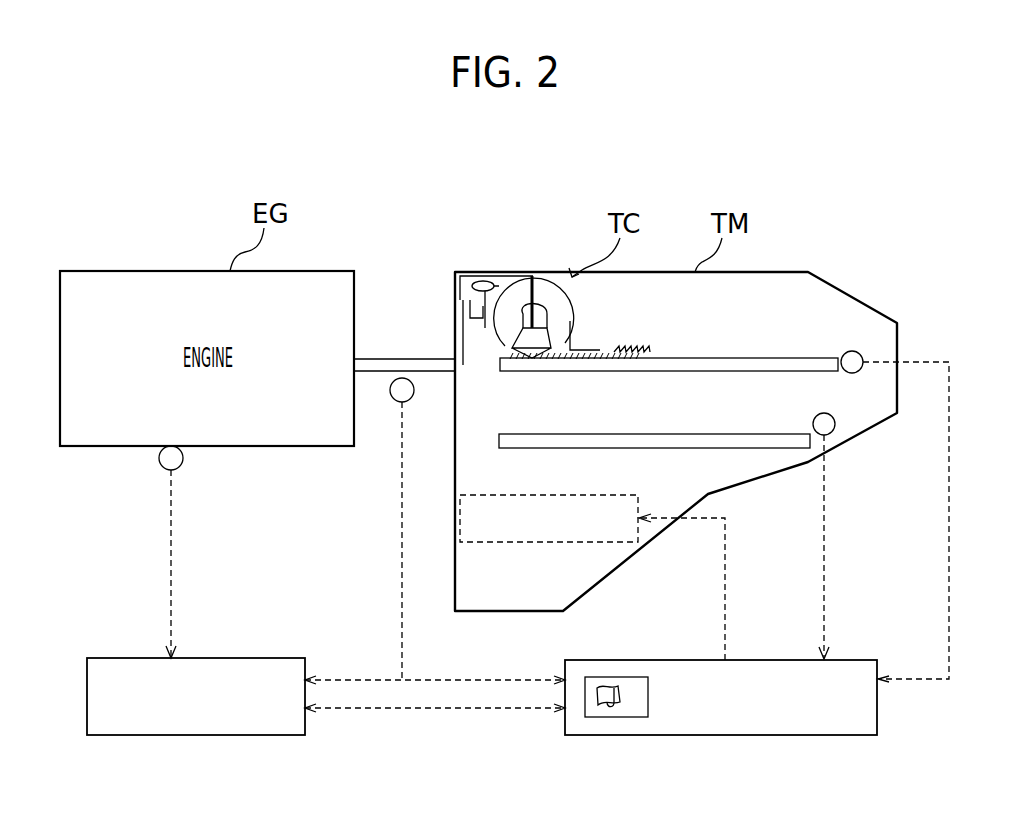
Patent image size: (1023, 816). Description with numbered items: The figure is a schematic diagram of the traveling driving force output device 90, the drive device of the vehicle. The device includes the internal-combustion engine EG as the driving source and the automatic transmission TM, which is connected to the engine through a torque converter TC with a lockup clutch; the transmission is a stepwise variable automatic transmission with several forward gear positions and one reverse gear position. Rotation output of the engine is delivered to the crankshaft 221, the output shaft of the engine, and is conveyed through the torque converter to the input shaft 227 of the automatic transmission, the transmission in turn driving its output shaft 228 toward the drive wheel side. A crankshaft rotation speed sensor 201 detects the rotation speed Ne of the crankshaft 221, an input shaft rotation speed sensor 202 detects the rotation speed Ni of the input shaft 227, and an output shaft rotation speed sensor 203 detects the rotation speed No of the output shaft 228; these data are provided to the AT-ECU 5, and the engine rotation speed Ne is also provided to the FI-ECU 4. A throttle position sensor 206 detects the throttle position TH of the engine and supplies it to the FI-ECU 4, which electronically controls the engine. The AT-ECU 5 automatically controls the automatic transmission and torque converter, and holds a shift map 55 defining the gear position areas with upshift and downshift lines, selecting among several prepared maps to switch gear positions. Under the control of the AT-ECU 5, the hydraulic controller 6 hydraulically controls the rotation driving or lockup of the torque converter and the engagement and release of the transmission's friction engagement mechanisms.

The traveling driving force output device 90 is at (910, 219).
The crankshaft 221 is at (378, 359).
The input shaft 227 is at (677, 357).
The output shaft 228 is at (665, 434).
The input shaft rotation speed sensor 202 is at (862, 354).
The output shaft rotation speed sensor 203 is at (860, 410).
The crankshaft rotation speed sensor 201 is at (398, 402).
The throttle position sensor 206 is at (163, 473).
The hydraulic controller 6 is at (533, 543).
The FI-ECU 4 is at (250, 658).
The shift map 55 is at (632, 677).
The AT-ECU 5 is at (745, 660).